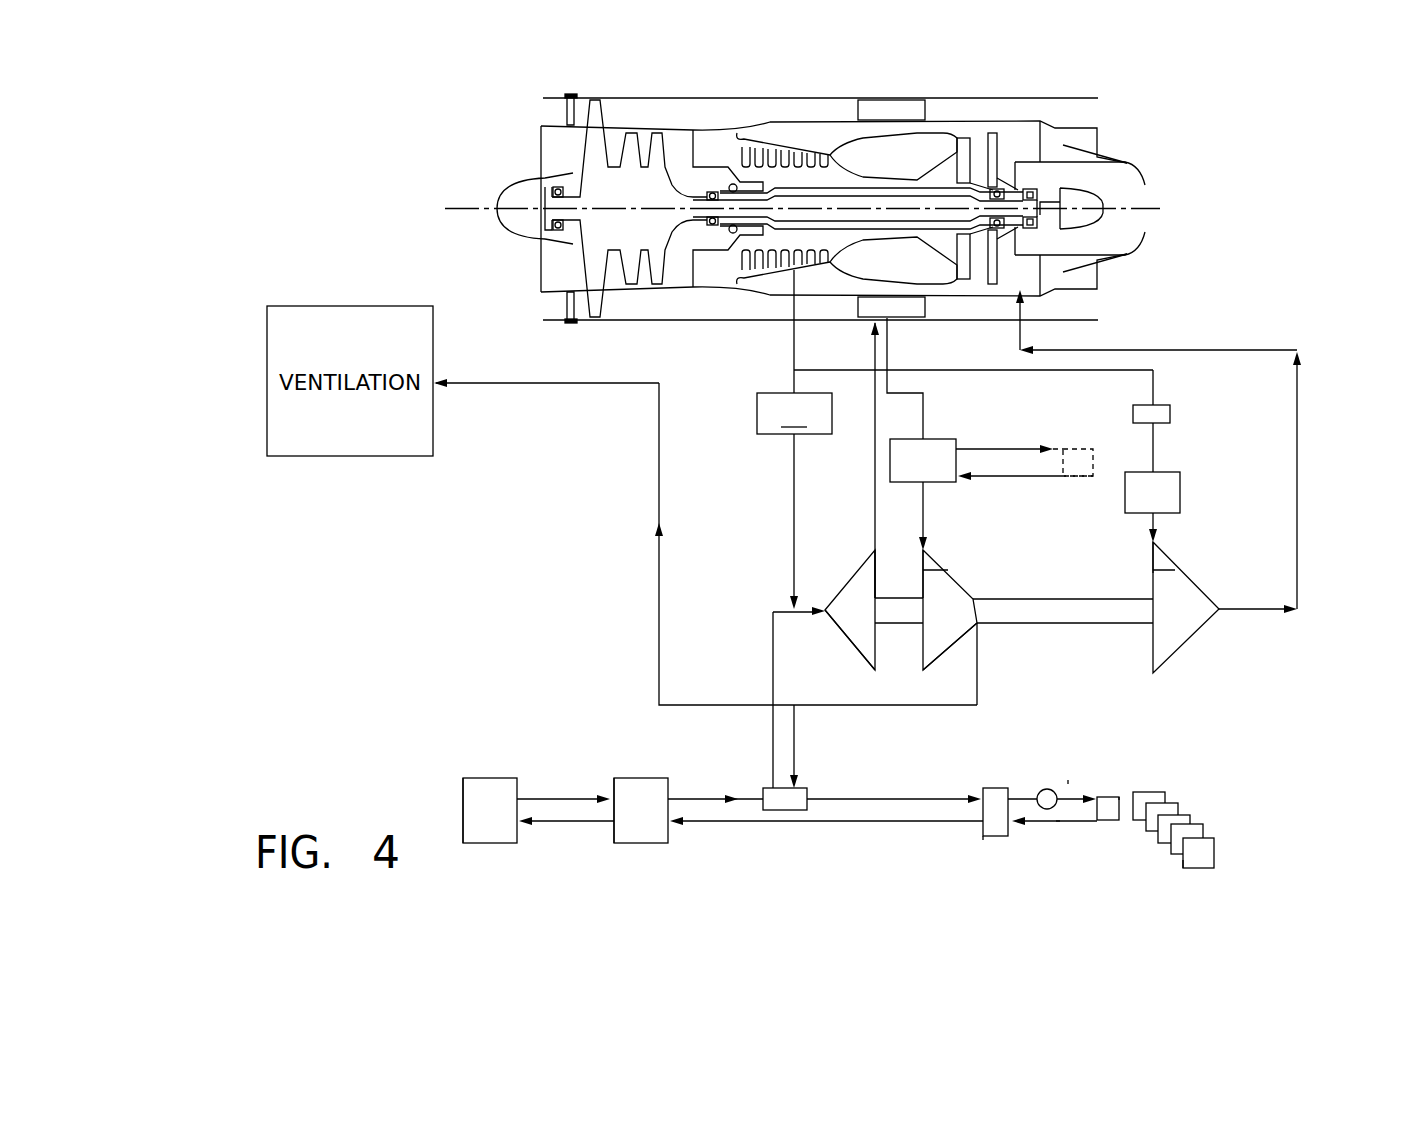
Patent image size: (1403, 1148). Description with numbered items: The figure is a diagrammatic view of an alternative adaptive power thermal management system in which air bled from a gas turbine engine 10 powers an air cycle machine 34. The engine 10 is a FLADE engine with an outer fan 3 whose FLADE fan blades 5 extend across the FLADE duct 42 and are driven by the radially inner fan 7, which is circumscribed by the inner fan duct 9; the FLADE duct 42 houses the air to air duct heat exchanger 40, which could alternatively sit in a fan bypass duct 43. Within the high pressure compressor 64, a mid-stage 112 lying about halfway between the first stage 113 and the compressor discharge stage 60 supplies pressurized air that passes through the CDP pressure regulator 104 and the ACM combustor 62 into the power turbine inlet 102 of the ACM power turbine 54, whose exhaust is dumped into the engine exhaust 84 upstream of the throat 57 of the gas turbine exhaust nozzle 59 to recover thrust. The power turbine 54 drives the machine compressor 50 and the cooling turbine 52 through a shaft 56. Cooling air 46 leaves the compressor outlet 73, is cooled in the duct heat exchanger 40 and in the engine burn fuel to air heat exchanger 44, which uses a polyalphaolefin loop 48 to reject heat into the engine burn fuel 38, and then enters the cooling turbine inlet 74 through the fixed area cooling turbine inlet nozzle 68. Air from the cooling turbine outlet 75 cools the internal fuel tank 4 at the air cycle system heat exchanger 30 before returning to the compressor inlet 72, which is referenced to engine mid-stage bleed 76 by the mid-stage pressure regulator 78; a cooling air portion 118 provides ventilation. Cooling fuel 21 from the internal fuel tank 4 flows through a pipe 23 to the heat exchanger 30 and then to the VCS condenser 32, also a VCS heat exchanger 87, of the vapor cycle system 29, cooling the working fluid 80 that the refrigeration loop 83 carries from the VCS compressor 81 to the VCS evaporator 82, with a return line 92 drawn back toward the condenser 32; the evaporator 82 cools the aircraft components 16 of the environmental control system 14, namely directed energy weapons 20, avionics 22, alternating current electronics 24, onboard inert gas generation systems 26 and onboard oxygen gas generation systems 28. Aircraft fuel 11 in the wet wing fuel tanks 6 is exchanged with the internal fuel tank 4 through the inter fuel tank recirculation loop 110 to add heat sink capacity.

The gas turbine engine 10 is at (510, 94).
The outer fan 3 is at (580, 80).
The FLADE fan blades 5 is at (597, 118).
The inner fan 7 is at (607, 138).
The inner fan duct 9 is at (630, 290).
The fan bypass duct 43 is at (700, 117).
The FLADE duct 42 is at (725, 290).
The first stage 113 is at (693, 252).
The mid-stage 112 is at (788, 252).
The compressor discharge stage 60 is at (840, 263).
The high pressure compressor 64 is at (770, 268).
The engine mid-stage bleed 76 is at (795, 267).
The duct heat exchanger 40 is at (905, 316).
The gas turbine exhaust nozzle 59 is at (1128, 160).
The throat 57 is at (1145, 185).
The engine exhaust 84 is at (1025, 277).
The mid-stage pressure regulator 78 is at (794, 439).
The cooling air portion 118 is at (659, 578).
The cooling air 46 is at (872, 472).
The engine burn fuel to air heat exchanger 44 is at (938, 437).
The engine burn fuel 38 is at (992, 447).
The polyalphaolefin loop 48 is at (1084, 440).
The CDP pressure regulator 104 is at (1170, 404).
The ACM combustor 62 is at (1167, 472).
The compressor inlet 72 is at (827, 607).
The compressor outlet 73 is at (873, 549).
The machine compressor 50 is at (838, 640).
The air cycle machine 34 is at (957, 580).
The cooling turbine inlet 74 is at (938, 551).
The cooling turbine inlet nozzle 68 is at (944, 562).
The cooling turbine 52 is at (952, 652).
The cooling turbine outlet 75 is at (983, 627).
The shaft 56 is at (1125, 626).
The ACM power turbine 54 is at (1187, 642).
The power turbine inlet 102 is at (1153, 550).
The aircraft fuel 11 is at (487, 797).
The wet wing fuel tanks 6 is at (472, 778).
The internal fuel tank 4 is at (628, 778).
The inter fuel tank recirculation loop 110 is at (572, 797).
The cooling fuel 21 is at (730, 795).
The air cycle system heat exchanger 30 is at (785, 811).
The pipe 23 is at (858, 798).
The VCS condenser 32 is at (993, 789).
The VCS compressor 81 is at (1042, 789).
The working fluid 80 is at (1037, 823).
The VCS heat exchanger 87 is at (992, 840).
The return conduit 92 is at (1056, 823).
The refrigeration loop 83 is at (1090, 822).
The VCS evaporator 82 is at (1120, 797).
The vapor cycle system 29 is at (1072, 775).
The cooled aircraft components 16 is at (1216, 810).
The environmental control system 14 is at (1178, 775).
The directed energy weapons 20 is at (1165, 797).
The alternating current electronics 24 is at (1178, 808).
The onboard inert gas generation systems 26 is at (1190, 821).
The onboard oxygen gas generation systems 28 is at (1218, 838).
The avionics 22 is at (1183, 860).